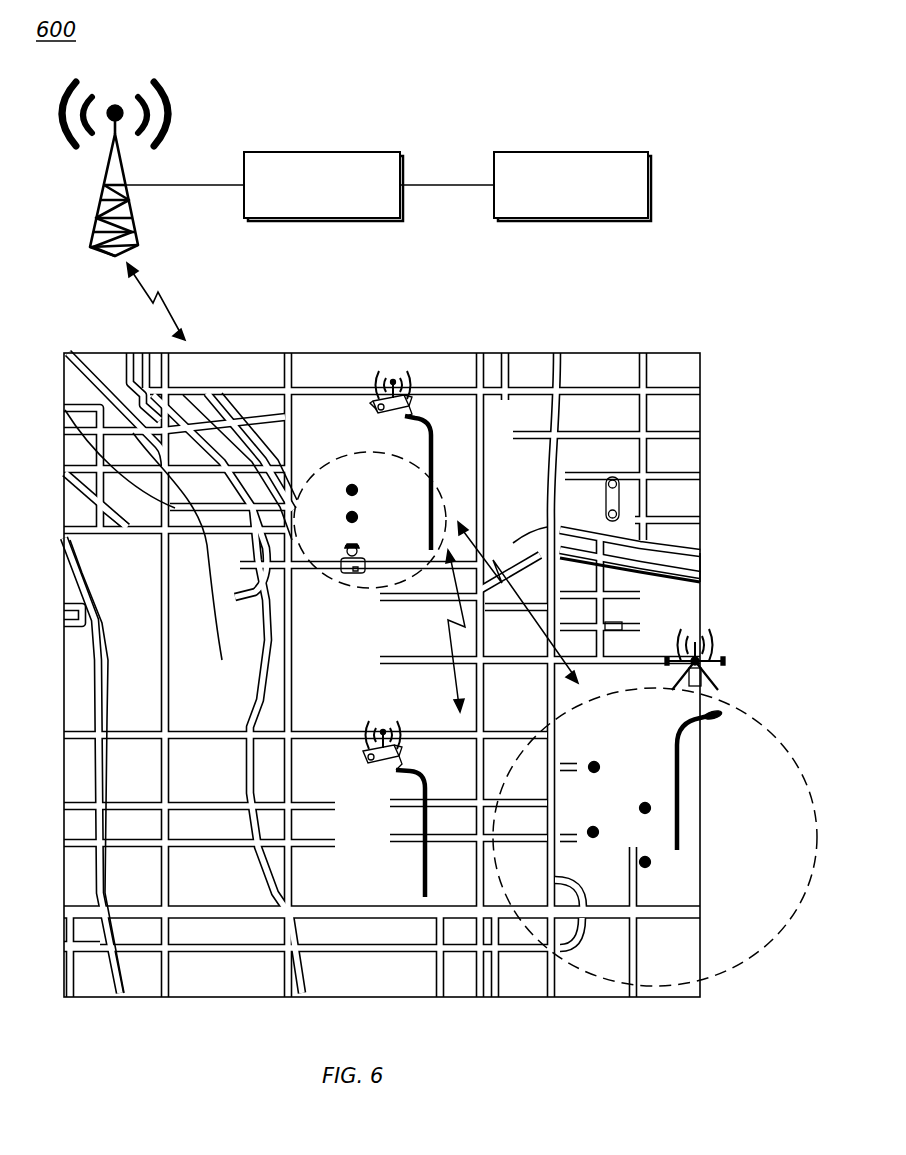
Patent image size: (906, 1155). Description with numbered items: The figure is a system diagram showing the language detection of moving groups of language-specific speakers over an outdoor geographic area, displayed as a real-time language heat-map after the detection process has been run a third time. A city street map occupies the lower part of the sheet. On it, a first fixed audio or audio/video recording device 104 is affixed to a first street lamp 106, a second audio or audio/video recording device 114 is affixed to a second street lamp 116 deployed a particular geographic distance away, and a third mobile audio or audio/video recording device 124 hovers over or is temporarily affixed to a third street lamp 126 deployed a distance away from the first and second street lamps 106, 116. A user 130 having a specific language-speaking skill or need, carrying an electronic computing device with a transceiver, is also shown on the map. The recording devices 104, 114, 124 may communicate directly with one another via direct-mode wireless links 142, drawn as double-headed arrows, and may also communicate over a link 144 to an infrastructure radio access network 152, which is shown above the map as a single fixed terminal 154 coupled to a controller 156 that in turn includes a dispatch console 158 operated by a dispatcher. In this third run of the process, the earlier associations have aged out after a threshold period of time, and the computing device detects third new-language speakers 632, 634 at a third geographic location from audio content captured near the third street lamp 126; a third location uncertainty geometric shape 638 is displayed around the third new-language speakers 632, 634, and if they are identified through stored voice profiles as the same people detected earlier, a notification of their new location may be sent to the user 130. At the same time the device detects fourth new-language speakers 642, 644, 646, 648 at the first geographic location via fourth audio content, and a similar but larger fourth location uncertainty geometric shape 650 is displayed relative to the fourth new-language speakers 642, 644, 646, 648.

The first fixed audio or audio/video recording device 104 is at (400, 385).
The first street lamp 106 is at (436, 467).
The second audio or audio/video recording device 114 is at (363, 760).
The second street lamp 116 is at (430, 853).
The third mobile audio or audio/video recording device 124 is at (712, 666).
The third street lamp 126 is at (676, 770).
The user 130 is at (364, 548).
The direct-mode wireless link 142 is at (450, 645).
The infrastructure RAN link 144 is at (170, 303).
The infrastructure radio access network 152 is at (42, 108).
The fixed terminal 154 is at (98, 217).
The controller 156 is at (320, 152).
The dispatch console 158 is at (570, 152).
The third new-language speaker 632 is at (357, 490).
The third new-language speaker 634 is at (357, 517).
The third location uncertainty geometric shape 638 is at (368, 452).
The fourth new-language speaker 642 is at (593, 763).
The fourth new-language speaker 644 is at (641, 806).
The fourth new-language speaker 646 is at (599, 832).
The fourth new-language speaker 648 is at (650, 866).
The fourth location uncertainty geometric shape 650 is at (787, 750).